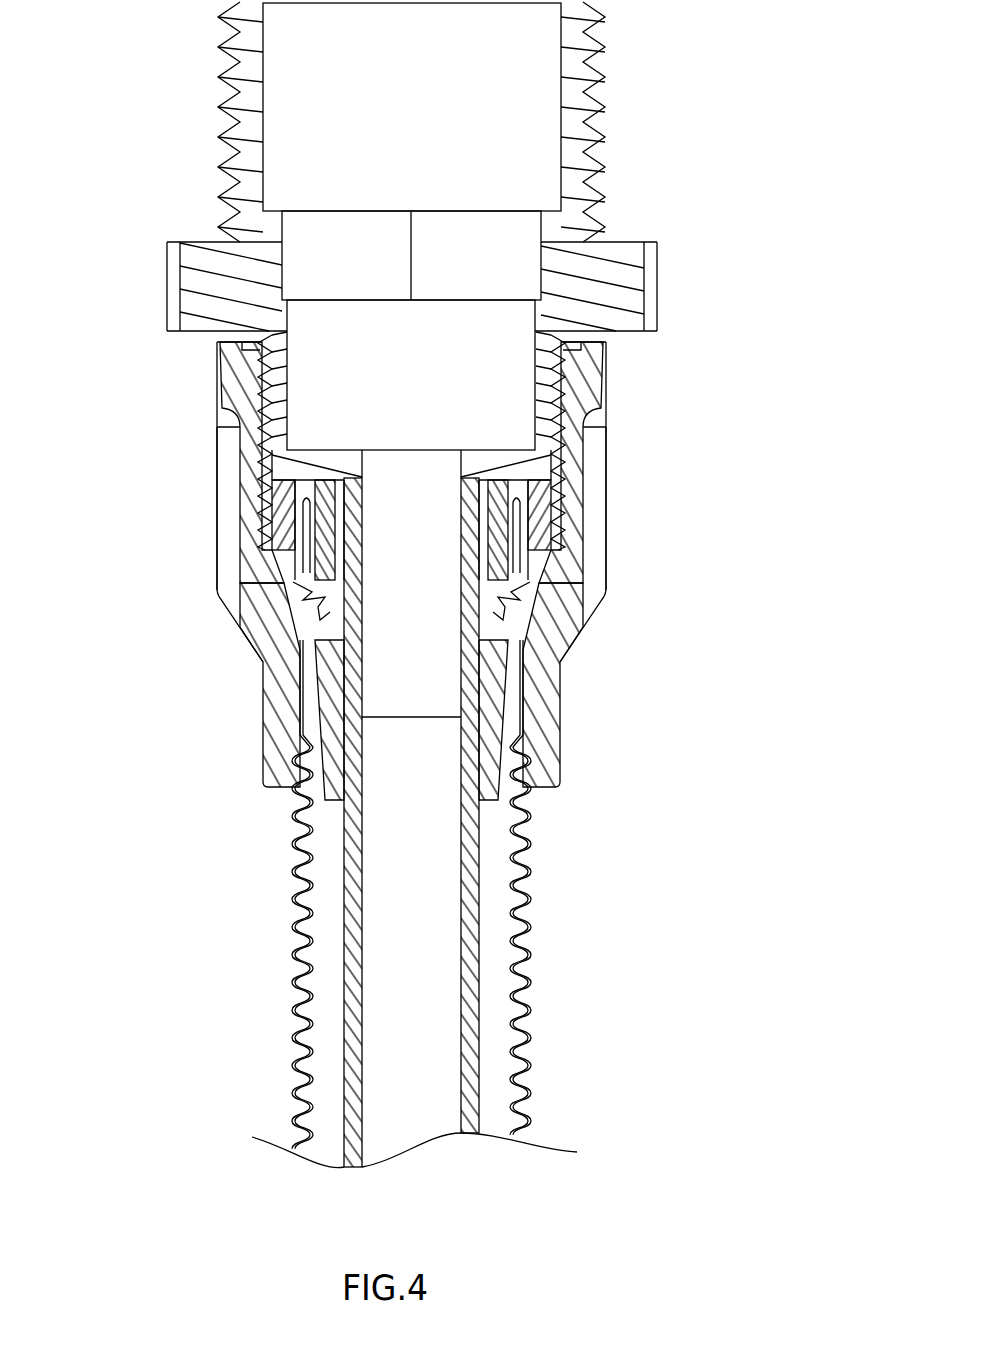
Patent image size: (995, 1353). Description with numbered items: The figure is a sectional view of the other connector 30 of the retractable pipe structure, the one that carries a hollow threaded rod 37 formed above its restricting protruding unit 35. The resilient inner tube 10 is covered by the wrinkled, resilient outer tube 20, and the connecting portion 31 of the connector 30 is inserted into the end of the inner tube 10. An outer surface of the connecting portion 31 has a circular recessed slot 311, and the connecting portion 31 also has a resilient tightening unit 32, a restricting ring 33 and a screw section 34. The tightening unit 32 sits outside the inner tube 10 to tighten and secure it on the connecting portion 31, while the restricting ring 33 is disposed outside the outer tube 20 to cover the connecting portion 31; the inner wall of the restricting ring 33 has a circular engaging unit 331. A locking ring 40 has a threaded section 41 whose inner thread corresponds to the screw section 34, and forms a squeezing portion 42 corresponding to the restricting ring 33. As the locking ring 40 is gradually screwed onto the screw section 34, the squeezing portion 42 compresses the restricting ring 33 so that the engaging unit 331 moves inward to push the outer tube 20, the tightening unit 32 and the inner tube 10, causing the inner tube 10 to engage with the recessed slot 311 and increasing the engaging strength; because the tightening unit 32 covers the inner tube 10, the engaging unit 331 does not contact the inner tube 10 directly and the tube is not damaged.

The inner tube 10 is at (329, 908).
The outer tube 20 is at (289, 818).
The connector 30 is at (455, 226).
The connecting portion 31 is at (394, 578).
The recessed slot 311 is at (350, 643).
The tightening unit 32 is at (327, 695).
The restricting ring 33 is at (288, 533).
The engaging unit 331 is at (302, 594).
The screw section 34 is at (583, 423).
The restricting protruding unit 35 is at (193, 259).
The hollow threaded rod 37 is at (253, 73).
The locking ring 40 is at (531, 561).
The threaded section 41 is at (563, 392).
The squeezing portion 42 is at (552, 625).